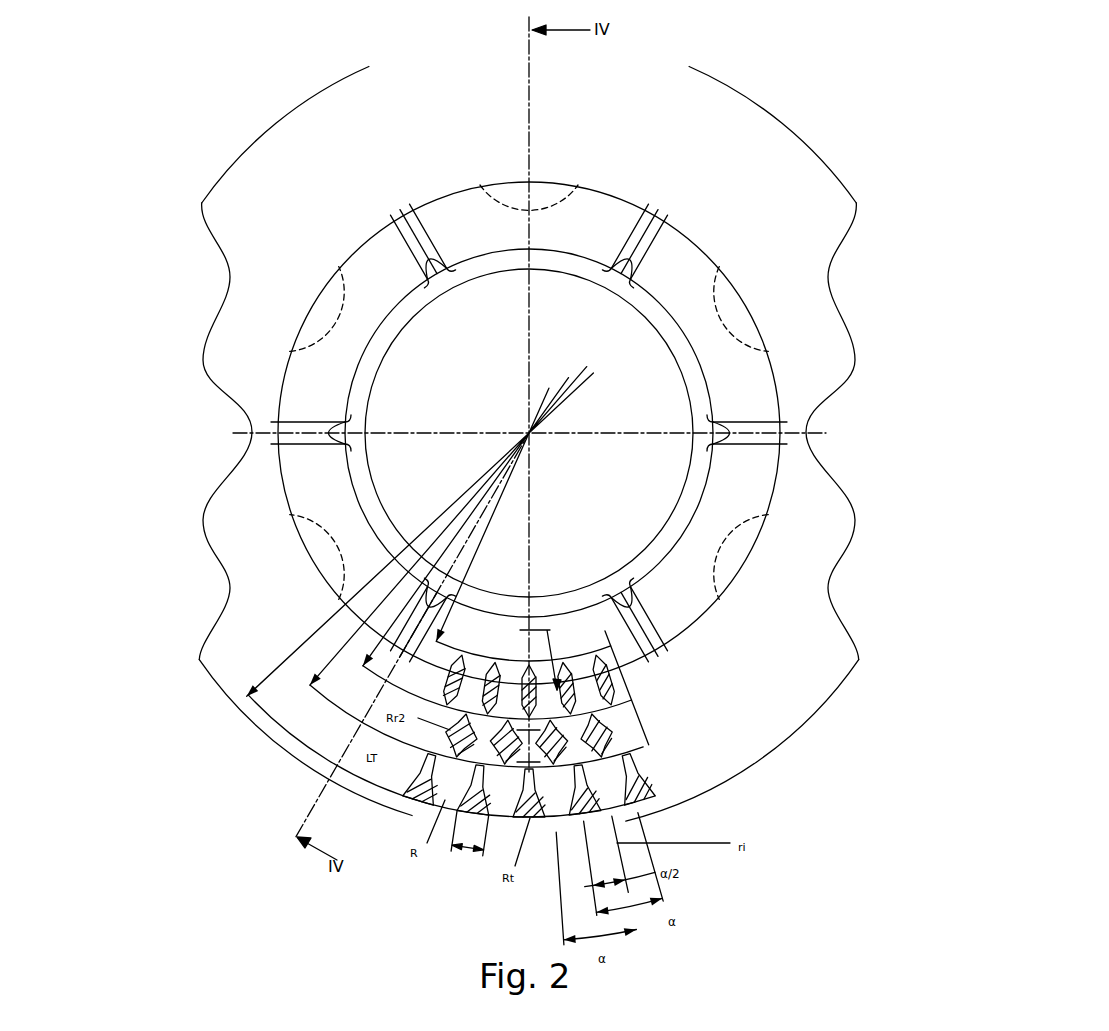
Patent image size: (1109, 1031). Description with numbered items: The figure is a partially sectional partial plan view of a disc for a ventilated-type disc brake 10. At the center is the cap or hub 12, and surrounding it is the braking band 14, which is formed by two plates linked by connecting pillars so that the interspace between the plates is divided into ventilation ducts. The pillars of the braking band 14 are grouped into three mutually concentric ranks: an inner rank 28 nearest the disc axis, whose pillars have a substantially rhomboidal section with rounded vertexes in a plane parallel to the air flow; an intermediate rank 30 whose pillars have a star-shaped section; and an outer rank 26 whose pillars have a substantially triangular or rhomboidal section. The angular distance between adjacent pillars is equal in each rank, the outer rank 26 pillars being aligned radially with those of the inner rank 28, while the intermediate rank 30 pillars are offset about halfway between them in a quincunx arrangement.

The disc for a ventilated-type disc brake 10 is at (725, 103).
The cap or hub 12 is at (655, 322).
The braking band 14 is at (227, 666).
The outer rank 26 is at (638, 795).
The inner rank 28 is at (603, 685).
The intermediate rank 30 is at (603, 737).